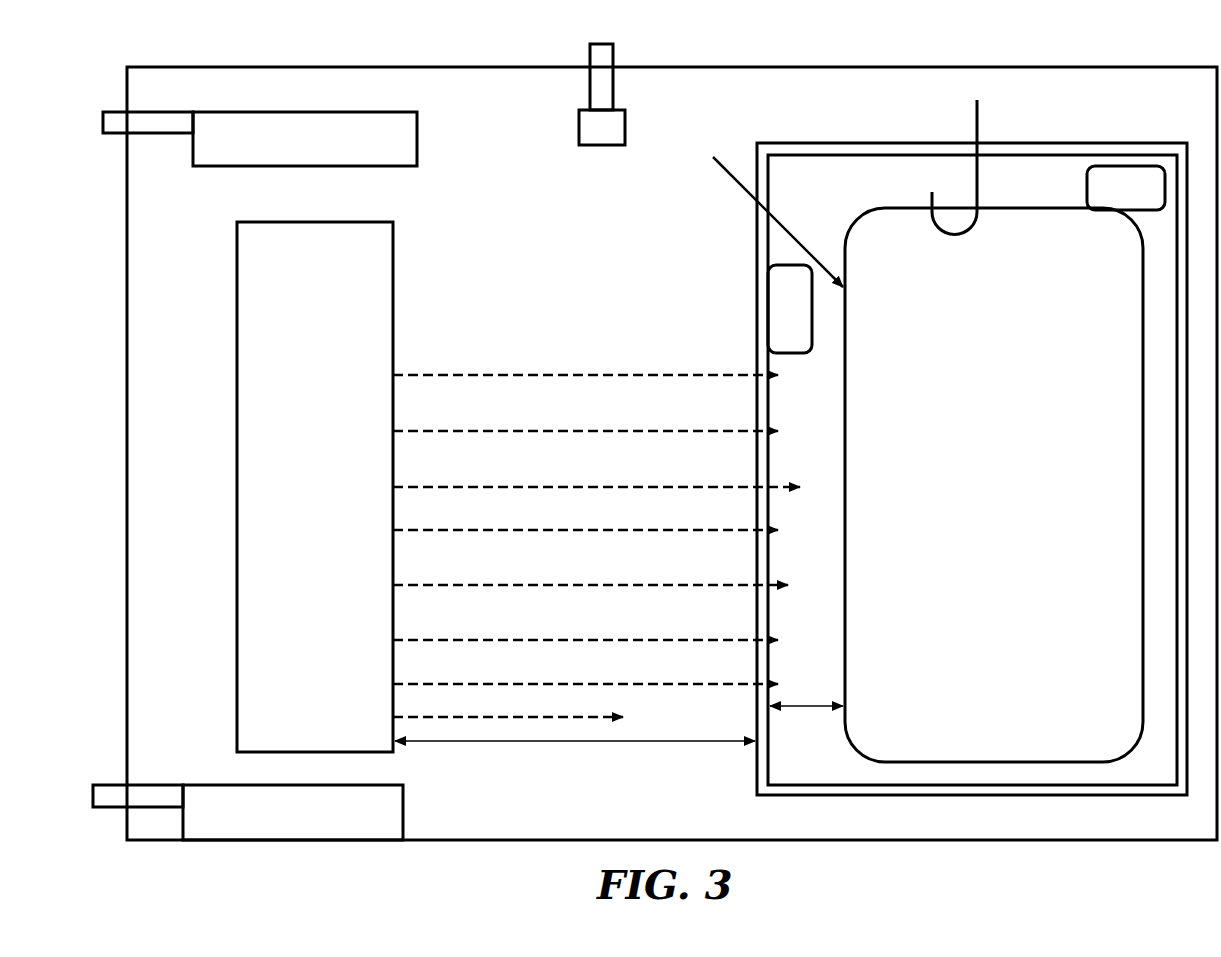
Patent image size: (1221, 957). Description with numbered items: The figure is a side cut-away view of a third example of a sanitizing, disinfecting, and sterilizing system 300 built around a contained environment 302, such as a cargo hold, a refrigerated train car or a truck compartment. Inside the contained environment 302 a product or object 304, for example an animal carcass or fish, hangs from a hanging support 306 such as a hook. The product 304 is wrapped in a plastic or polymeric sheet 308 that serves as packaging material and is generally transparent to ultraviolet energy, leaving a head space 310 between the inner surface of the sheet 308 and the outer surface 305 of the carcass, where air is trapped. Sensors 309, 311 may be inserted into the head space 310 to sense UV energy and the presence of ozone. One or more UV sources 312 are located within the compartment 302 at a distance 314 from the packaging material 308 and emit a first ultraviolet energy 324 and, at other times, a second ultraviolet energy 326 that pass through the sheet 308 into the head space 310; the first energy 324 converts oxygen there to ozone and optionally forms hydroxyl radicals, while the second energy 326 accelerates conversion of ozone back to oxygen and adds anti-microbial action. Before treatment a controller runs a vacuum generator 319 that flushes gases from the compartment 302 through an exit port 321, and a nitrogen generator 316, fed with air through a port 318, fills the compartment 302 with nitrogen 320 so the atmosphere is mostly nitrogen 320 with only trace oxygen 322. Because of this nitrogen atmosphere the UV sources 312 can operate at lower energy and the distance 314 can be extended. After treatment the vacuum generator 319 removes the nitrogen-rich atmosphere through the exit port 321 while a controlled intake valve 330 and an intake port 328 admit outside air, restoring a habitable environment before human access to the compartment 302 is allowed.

The sanitizing, disinfecting, and sterilizing system 300 is at (190, 45).
The contained environment 302 is at (325, 67).
The product or object 304 is at (855, 228).
The outer surface of the carcass 305 is at (757, 209).
The hanging support 306 is at (975, 130).
The plastic or polymeric sheet 308 is at (865, 140).
The sensor 309 is at (788, 265).
The head space 310 is at (813, 710).
The sensor 311 is at (1130, 172).
The UV source 312 is at (270, 222).
The distance 314 is at (495, 745).
The nitrogen generator 316 is at (385, 787).
The port 318 is at (140, 785).
The vacuum generator 319 is at (395, 112).
The nitrogen 320 is at (535, 280).
The exit port 321 is at (150, 112).
The oxygen 322 is at (540, 175).
The first ultraviolet energy 324 is at (457, 352).
The second ultraviolet energy 326 is at (525, 465).
The intake port 328 is at (592, 75).
The controlled intake valve 330 is at (590, 120).